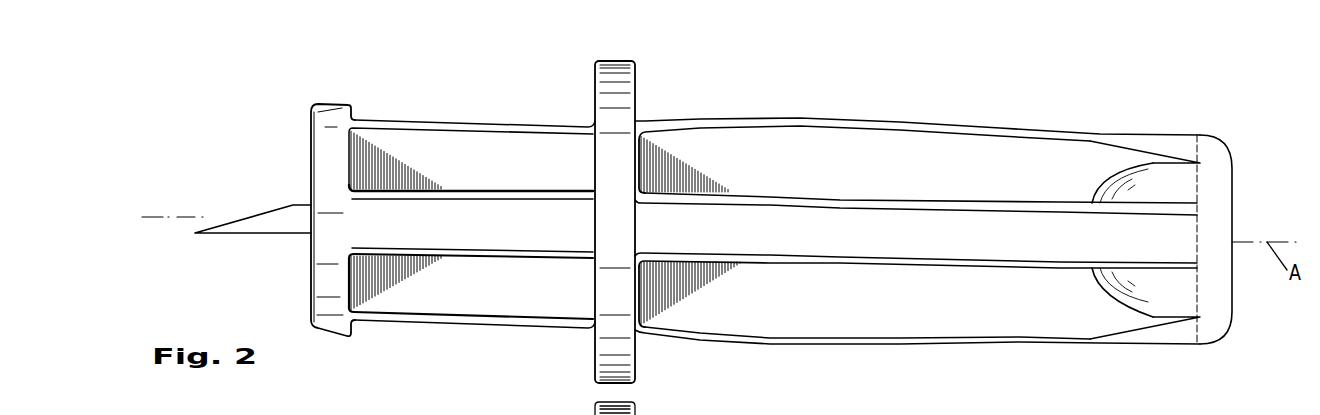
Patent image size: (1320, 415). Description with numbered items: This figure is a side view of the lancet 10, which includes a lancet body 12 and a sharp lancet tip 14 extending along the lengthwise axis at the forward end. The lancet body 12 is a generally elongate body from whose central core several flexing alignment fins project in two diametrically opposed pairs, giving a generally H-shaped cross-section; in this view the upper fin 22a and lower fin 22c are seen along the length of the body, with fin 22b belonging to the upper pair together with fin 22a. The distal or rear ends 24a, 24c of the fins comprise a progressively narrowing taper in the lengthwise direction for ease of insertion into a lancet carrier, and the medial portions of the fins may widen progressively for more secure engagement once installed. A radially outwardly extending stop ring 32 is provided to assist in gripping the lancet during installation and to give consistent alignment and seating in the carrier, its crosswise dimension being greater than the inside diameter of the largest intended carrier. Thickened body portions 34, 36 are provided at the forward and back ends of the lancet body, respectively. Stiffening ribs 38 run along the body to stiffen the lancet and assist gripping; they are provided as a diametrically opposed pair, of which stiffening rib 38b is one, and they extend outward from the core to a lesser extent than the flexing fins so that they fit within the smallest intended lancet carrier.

The lancet 10 is at (418, 100).
The lancet body 12 is at (1057, 162).
The lancet tip 14 is at (242, 225).
The flexing fin 22a is at (983, 127).
The flexing fin 22b is at (723, 414).
The flexing fin 22c is at (837, 342).
The rear end of fin 24a is at (1167, 152).
The rear end of fin 24c is at (1128, 340).
The stop ring 32 is at (593, 353).
The thickened body portion 34 is at (330, 322).
The thickened body portion 36 is at (1198, 337).
The stiffening rib 38 is at (880, 228).
The stiffening rib 38b is at (935, 414).